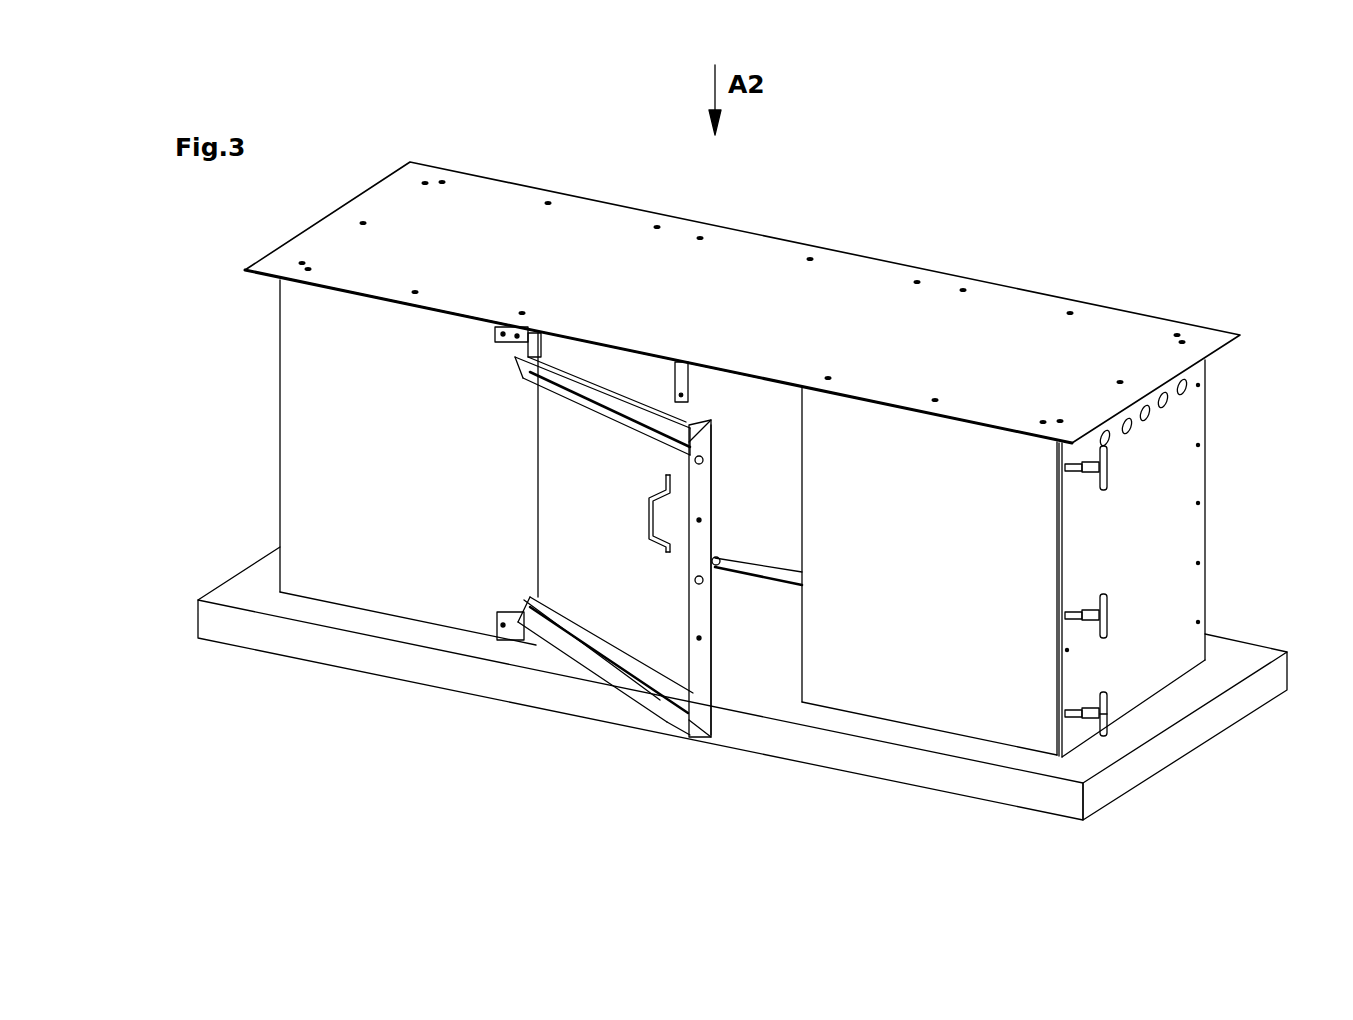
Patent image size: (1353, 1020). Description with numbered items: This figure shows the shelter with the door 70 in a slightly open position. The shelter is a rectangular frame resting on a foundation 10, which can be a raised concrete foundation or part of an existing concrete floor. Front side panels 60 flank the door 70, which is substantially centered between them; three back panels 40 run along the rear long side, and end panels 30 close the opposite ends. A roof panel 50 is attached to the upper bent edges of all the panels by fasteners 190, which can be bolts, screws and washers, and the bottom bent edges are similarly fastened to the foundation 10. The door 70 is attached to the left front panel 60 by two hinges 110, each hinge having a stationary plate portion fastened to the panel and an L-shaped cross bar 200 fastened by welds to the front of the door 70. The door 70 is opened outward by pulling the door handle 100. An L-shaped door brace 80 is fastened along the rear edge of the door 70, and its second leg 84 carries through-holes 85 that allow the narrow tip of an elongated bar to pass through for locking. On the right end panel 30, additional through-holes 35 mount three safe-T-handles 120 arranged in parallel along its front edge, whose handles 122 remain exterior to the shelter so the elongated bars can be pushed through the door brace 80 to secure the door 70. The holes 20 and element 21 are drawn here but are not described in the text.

The foundation 10 is at (707, 683).
The holes 20 is at (1203, 418).
The latch bar 21 is at (814, 531).
The end panel 30 is at (1188, 558).
The through-holes 35 is at (1015, 599).
The back panel 40 is at (892, 529).
The roof panel 50 is at (742, 302).
The front side panel 60 is at (359, 462).
The door 70 is at (546, 465).
The door brace 80 is at (798, 632).
The second leg 84 is at (754, 580).
The through-holes 85 is at (780, 536).
The door handle 100 is at (545, 524).
The hinge 110 is at (425, 687).
The safe-T-handle 120 is at (1201, 785).
The handle 122 is at (1191, 606).
The fasteners 190 is at (767, 200).
The L-shaped cross bar 200 is at (588, 582).